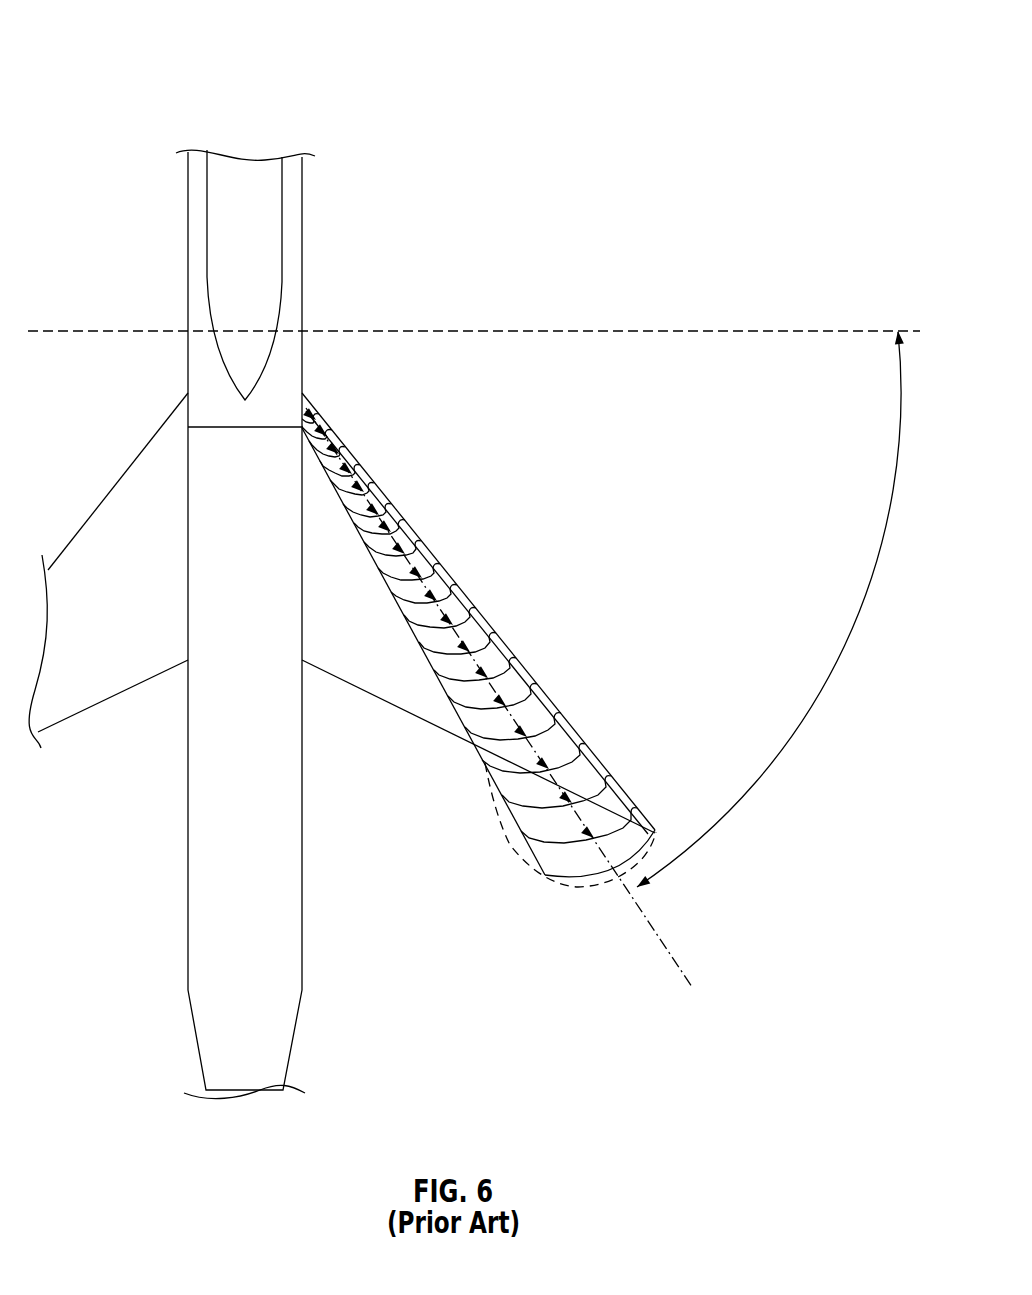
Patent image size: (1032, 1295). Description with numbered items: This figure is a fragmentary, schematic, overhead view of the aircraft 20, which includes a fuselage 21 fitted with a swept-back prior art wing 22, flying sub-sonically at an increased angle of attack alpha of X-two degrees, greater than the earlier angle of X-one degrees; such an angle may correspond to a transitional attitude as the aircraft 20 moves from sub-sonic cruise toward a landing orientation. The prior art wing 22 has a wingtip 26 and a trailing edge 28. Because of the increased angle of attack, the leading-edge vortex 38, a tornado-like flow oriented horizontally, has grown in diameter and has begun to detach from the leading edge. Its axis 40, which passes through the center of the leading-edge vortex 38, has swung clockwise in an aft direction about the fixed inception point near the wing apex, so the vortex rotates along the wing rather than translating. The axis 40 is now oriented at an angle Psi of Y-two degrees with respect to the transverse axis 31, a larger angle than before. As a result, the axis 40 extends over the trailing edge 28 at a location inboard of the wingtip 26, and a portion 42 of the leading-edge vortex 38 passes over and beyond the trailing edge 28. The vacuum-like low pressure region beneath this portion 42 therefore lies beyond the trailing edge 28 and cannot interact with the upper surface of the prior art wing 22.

The aircraft 20 is at (122, 42).
The fuselage 21 is at (186, 265).
The prior art wing 22 is at (372, 662).
The wingtip 26 is at (657, 832).
The trailing edge 28 is at (423, 720).
The transverse axis 31 is at (803, 331).
The leading-edge vortex 38 is at (440, 555).
The axis 40 is at (673, 952).
The portion 42 is at (503, 840).